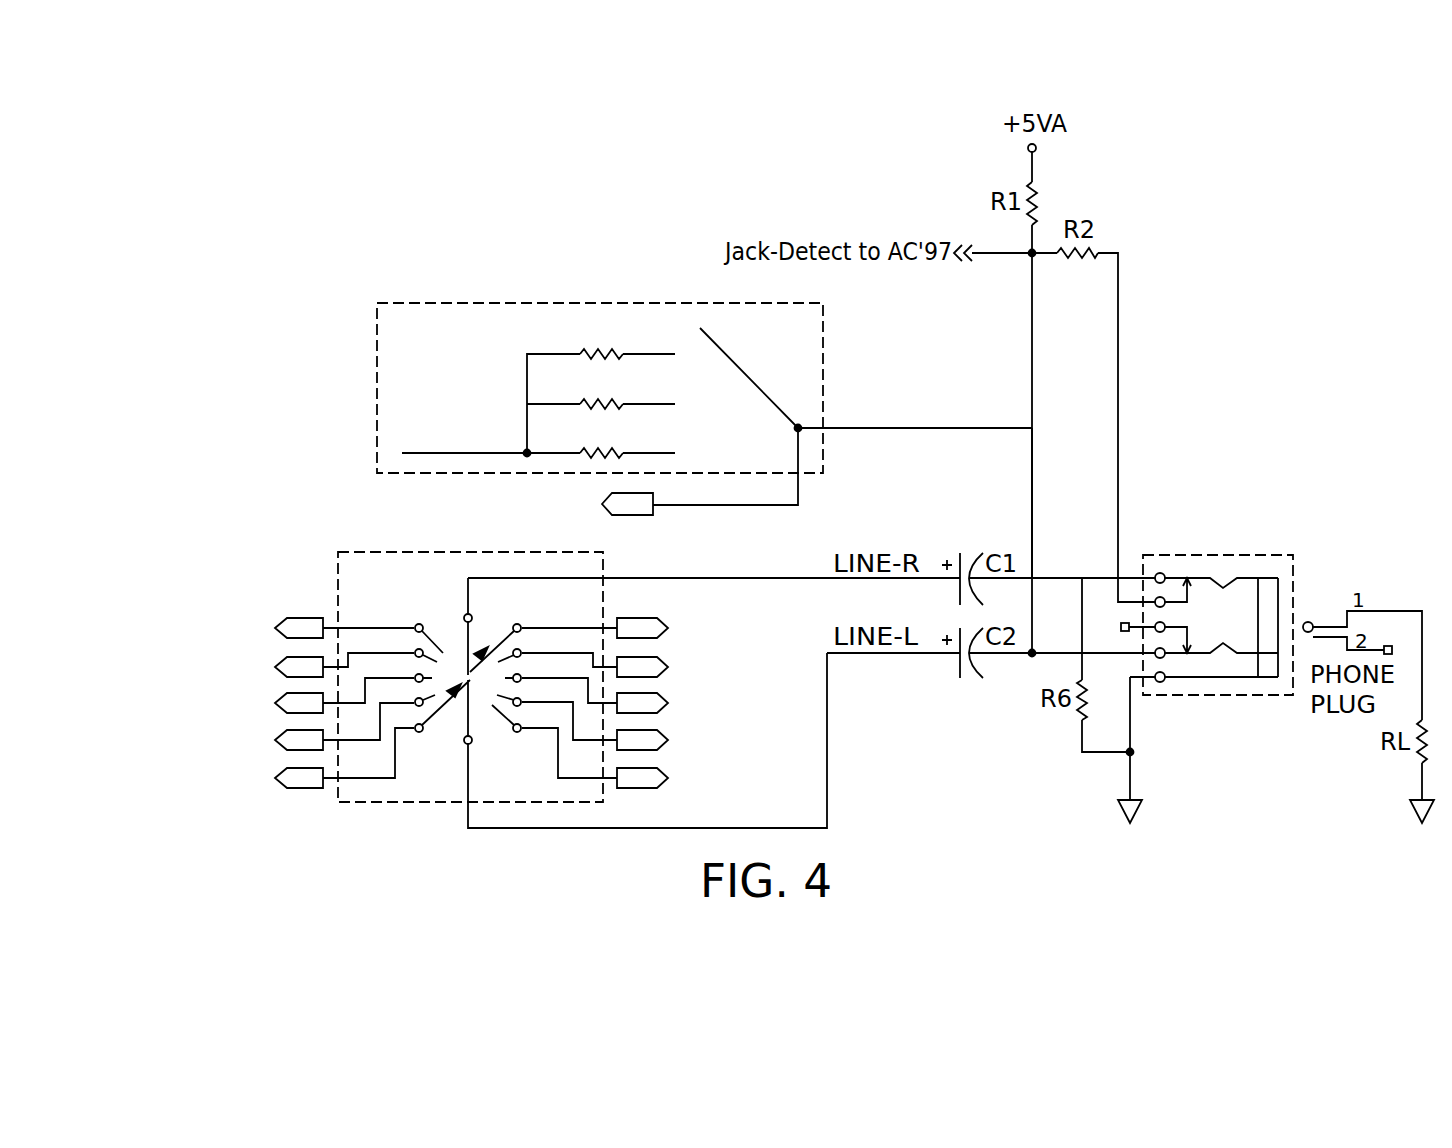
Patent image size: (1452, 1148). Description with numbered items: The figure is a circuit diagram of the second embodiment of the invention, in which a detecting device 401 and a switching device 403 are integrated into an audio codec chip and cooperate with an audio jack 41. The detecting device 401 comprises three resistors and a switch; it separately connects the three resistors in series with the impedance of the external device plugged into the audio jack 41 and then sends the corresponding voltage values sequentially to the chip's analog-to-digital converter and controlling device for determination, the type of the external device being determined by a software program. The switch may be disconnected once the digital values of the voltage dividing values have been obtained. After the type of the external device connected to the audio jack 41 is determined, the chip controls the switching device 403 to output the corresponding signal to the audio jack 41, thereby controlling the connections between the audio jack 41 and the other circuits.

The detecting device 401 is at (418, 303).
The switching device 403 is at (380, 552).
The audio jack 41 is at (1268, 555).